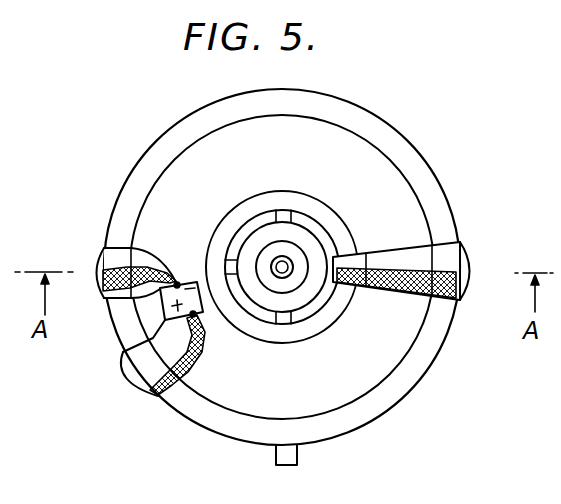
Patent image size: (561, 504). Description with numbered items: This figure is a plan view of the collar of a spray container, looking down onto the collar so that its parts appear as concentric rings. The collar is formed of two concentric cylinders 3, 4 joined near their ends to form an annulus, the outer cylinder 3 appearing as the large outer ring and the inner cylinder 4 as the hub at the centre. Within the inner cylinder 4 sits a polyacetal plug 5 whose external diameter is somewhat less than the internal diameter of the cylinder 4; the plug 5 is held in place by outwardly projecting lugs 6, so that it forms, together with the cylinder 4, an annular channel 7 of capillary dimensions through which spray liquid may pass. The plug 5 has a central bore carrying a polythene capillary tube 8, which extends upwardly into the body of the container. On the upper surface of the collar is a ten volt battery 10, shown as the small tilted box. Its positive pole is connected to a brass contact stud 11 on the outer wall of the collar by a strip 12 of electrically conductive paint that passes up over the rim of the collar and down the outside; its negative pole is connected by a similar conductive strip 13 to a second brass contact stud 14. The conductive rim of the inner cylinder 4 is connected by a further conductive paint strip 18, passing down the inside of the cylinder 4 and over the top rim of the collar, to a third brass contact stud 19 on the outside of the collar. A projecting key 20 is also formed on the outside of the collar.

The outer cylinder 3 is at (177, 122).
The inner cylinder 4 is at (313, 192).
The plug 5 is at (266, 298).
The lugs 6 is at (293, 318).
The annular channel 7 is at (315, 227).
The capillary tube 8 is at (275, 260).
The battery 10 is at (197, 281).
The contact stud 11 is at (132, 380).
The conductive strip 12 is at (190, 368).
The conductive strip 13 is at (148, 235).
The second contact stud 14 is at (98, 264).
The conductive paint strip 18 is at (384, 288).
The third contact stud 19 is at (472, 263).
The projecting key 20 is at (295, 452).